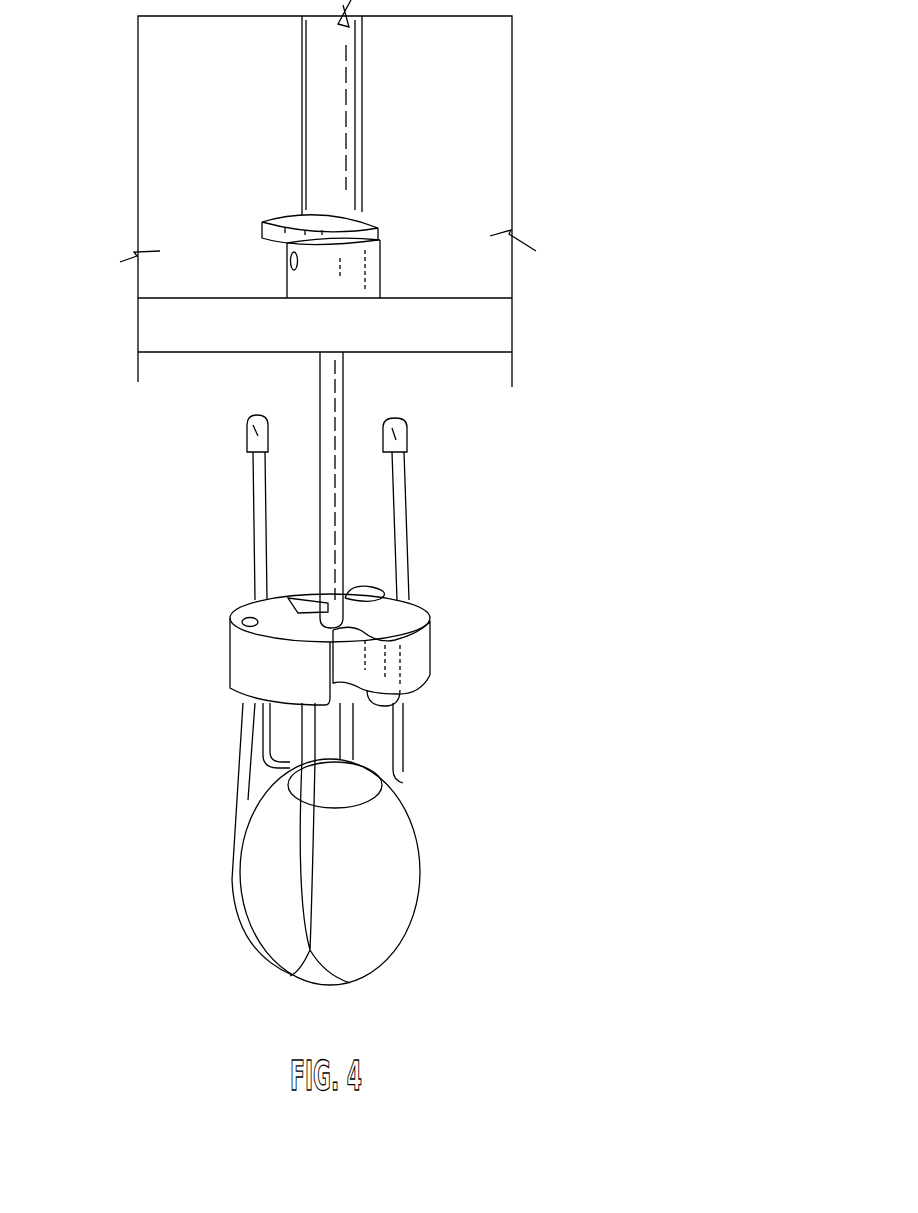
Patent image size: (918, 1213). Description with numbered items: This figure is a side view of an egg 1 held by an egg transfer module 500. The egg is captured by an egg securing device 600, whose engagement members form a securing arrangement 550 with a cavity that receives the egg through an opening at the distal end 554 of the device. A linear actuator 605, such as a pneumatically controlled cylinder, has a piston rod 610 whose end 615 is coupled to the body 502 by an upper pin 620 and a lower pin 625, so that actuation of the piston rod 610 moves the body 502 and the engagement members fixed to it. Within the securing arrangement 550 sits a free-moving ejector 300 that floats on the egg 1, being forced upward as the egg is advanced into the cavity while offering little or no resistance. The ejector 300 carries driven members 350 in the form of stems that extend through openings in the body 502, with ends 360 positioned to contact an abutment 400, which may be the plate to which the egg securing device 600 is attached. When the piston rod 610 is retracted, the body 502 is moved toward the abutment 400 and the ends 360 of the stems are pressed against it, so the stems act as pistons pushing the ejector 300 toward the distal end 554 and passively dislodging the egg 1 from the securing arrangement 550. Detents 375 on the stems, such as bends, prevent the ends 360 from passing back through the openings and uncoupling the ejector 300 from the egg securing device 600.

The egg 1 is at (362, 940).
The egg transfer module 500 is at (556, 129).
The linear actuator 605 is at (256, 199).
The abutment 400 is at (483, 335).
The piston rod 610 is at (343, 404).
The ends of stems 360 is at (242, 453).
The detents 375 is at (257, 428).
The driven members 350 is at (244, 501).
The egg securing device 600 is at (331, 674).
The end of piston rod 615 is at (356, 571).
The upper pin 620 is at (378, 588).
The body 502 is at (418, 657).
The lower pin 625 is at (400, 708).
The ejector 300 is at (380, 815).
The securing arrangement 550 is at (203, 862).
The distal end 554 is at (236, 970).